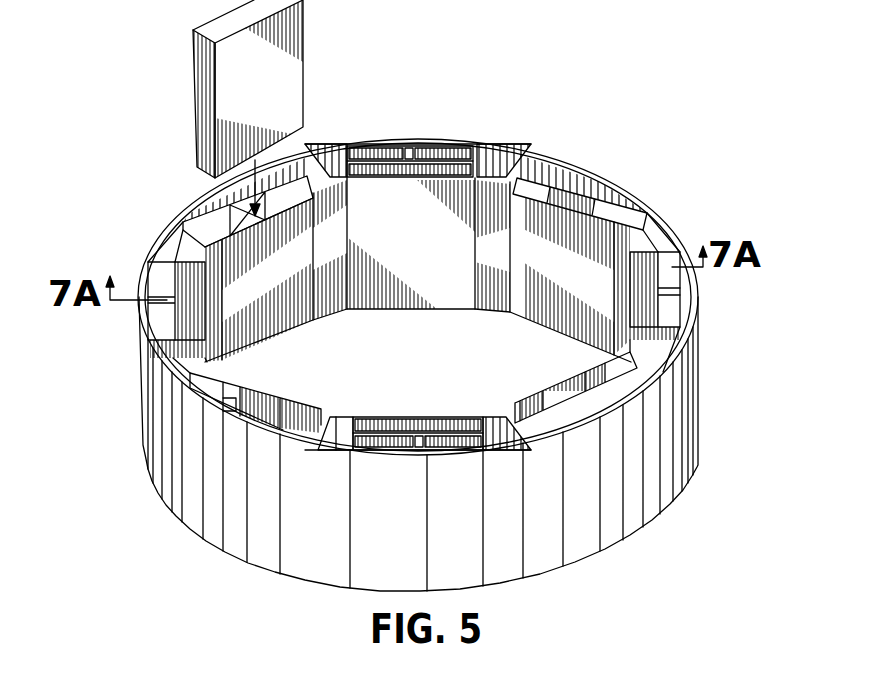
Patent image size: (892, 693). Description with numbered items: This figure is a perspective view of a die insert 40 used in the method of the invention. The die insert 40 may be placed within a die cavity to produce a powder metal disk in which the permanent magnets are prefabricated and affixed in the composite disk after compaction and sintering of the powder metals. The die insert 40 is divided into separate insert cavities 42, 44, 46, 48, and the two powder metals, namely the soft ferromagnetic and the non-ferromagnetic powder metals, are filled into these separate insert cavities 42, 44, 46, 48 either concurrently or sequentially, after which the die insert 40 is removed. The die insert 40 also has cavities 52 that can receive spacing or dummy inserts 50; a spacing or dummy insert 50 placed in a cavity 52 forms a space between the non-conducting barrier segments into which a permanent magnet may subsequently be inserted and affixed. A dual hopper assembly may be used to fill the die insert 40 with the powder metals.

The die insert 40 is at (686, 95).
The insert cavity 42 is at (464, 348).
The insert cavity 44 is at (572, 178).
The insert cavity 46 is at (507, 160).
The insert cavity 48 is at (410, 147).
The spacing or dummy insert 50 is at (280, 67).
The cavity 52 is at (426, 165).